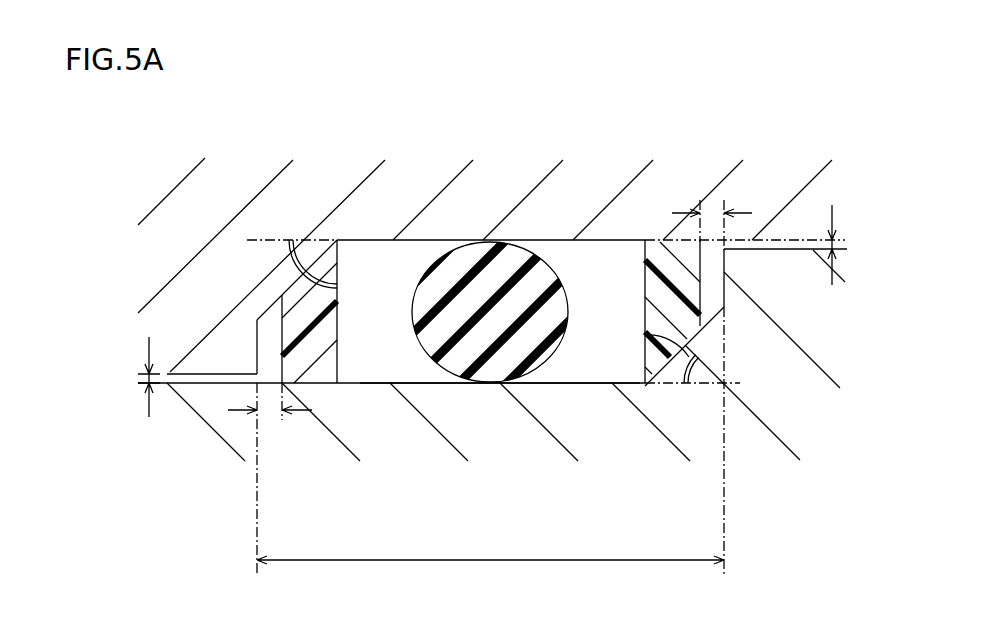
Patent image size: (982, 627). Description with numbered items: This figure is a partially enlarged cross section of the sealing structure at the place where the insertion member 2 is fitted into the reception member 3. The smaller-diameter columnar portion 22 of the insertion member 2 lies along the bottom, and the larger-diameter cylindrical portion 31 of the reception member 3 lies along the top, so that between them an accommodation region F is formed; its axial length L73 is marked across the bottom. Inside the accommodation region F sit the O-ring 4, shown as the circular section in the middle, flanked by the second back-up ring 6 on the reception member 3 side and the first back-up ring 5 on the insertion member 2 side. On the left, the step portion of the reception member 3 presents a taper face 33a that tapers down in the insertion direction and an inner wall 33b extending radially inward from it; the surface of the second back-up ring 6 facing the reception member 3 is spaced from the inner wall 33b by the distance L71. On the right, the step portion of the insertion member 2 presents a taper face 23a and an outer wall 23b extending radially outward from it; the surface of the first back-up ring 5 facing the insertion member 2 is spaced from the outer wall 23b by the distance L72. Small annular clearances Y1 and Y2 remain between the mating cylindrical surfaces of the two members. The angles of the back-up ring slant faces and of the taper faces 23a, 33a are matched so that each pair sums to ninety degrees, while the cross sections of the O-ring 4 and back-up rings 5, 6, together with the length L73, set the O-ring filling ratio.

The insertion member 2 is at (410, 443).
The reception member 3 is at (362, 197).
The O-ring 4 is at (474, 243).
The first back-up ring 5 is at (661, 247).
The second back-up ring 6 is at (320, 372).
The smaller-diameter columnar portion 22 is at (545, 385).
The larger-diameter cylindrical portion 31 is at (426, 240).
The taper face 33a is at (268, 307).
The inner wall 33b is at (257, 340).
The taper face 23a is at (713, 320).
The outer wall 23b is at (726, 290).
The accommodation region F is at (582, 250).
The annular clearance Y1 is at (852, 245).
The annular clearance Y2 is at (131, 377).
The distance L71 is at (270, 479).
The distance L72 is at (712, 377).
The length L73 is at (490, 547).